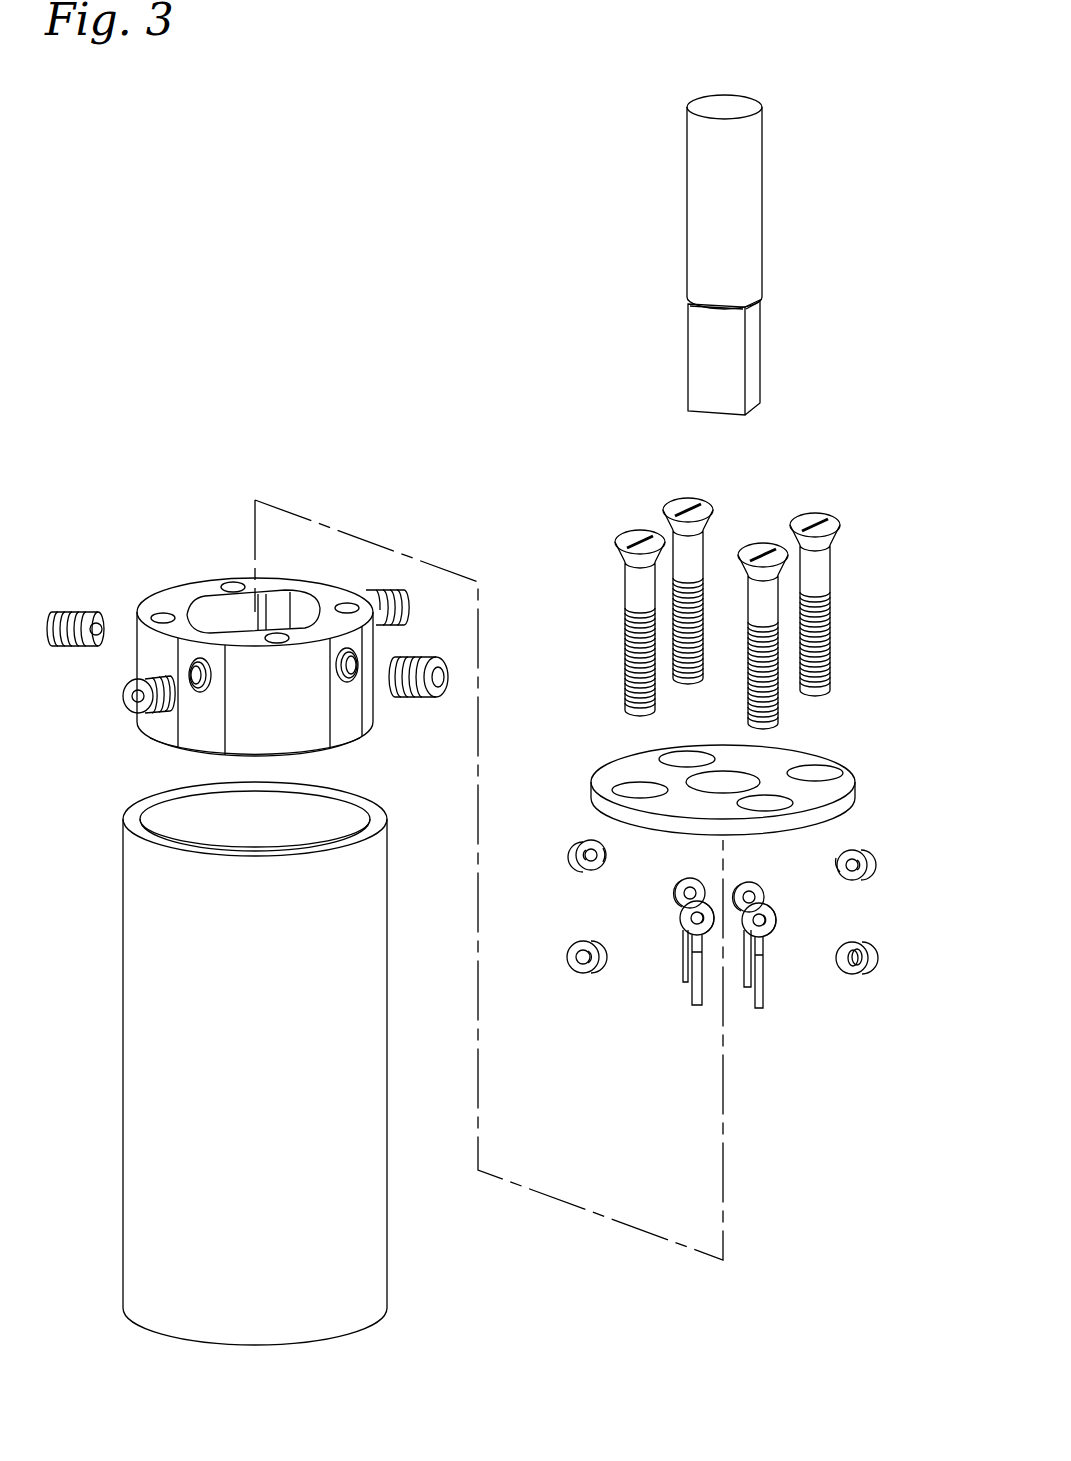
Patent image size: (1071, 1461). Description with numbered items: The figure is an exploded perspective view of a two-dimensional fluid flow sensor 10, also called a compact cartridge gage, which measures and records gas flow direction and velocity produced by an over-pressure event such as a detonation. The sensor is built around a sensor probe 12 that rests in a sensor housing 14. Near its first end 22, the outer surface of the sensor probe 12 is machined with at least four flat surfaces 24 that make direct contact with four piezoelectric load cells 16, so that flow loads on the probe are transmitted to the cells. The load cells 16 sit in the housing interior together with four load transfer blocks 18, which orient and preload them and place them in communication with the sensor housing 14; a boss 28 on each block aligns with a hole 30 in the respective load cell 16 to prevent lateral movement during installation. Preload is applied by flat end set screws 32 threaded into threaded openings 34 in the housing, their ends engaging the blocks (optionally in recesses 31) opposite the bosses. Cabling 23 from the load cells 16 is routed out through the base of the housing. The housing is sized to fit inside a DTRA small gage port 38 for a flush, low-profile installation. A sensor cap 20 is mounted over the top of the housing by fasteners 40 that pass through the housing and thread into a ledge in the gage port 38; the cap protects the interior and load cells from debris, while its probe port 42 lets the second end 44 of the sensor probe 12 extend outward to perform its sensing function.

The two-dimensional fluid flow sensor 10 is at (328, 228).
The sensor probe 12 is at (687, 193).
The sensor housing 14 is at (177, 588).
The piezoelectric load cells 16 is at (680, 882).
The load transfer blocks 18 is at (575, 873).
The sensor cap 20 is at (608, 765).
The first end 22 is at (688, 403).
The cabling 23 is at (697, 1005).
The flat surfaces 24 is at (710, 347).
The boss 28 is at (597, 873).
The hole 30 is at (692, 925).
The recesses 31 is at (578, 970).
The flat end set screws 32 is at (122, 695).
The threaded openings 34 is at (198, 690).
The gage port 38 is at (122, 932).
The fasteners 40 is at (622, 578).
The probe port 42 is at (741, 781).
The second end 44 is at (762, 106).